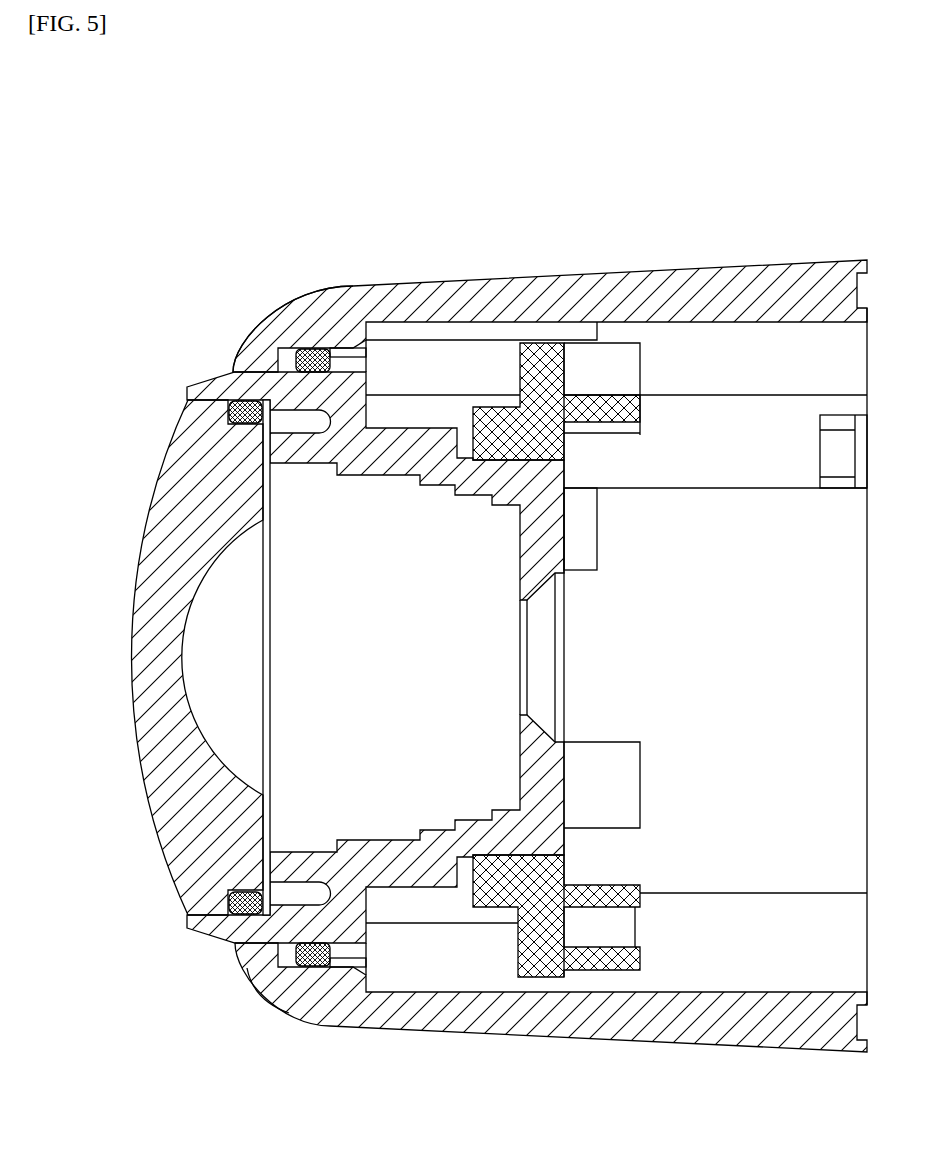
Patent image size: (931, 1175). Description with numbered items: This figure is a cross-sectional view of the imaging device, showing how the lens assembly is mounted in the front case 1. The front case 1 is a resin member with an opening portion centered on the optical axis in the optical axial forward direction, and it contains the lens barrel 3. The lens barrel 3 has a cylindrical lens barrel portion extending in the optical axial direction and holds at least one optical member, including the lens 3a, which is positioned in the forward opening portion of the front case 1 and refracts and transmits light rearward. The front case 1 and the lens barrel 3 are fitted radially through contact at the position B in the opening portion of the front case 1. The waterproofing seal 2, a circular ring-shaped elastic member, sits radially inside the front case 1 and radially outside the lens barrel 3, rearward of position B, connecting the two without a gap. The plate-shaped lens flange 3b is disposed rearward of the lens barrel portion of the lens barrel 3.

The front case 1 is at (315, 1000).
The waterproofing seal 2 is at (310, 372).
The lens barrel 3 is at (353, 350).
The lens 3a is at (185, 855).
The lens flange 3b is at (537, 343).
The position of radial fitting B is at (252, 340).